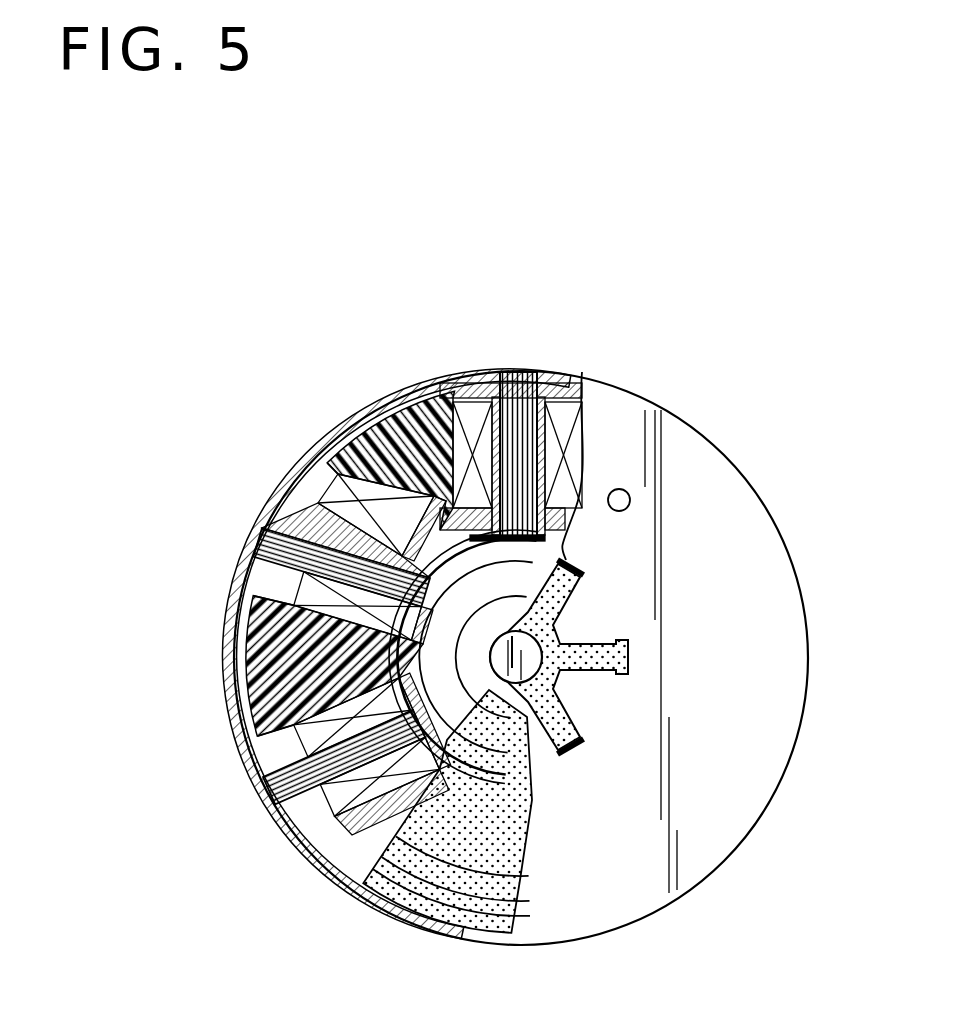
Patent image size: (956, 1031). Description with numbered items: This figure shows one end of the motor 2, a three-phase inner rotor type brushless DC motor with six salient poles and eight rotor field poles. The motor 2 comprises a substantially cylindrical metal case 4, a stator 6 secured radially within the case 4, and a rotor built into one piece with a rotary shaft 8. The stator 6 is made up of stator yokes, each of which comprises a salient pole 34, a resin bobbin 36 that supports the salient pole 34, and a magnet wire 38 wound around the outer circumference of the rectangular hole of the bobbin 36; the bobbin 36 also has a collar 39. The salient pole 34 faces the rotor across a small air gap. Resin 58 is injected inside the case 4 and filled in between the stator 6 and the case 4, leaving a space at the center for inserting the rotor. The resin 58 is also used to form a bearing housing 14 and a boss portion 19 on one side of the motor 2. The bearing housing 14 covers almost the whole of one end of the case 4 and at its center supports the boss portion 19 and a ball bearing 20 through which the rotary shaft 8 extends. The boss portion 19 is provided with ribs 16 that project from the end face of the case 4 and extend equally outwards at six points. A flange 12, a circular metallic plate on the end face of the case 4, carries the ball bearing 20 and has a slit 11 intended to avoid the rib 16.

The motor 2 is at (652, 352).
The case 4 is at (470, 374).
The stator 6 is at (528, 372).
The rotary shaft 8 is at (537, 663).
The slit 11 is at (632, 656).
The flange 12 is at (675, 462).
The bearing housing 14 is at (592, 620).
The ribs 16 is at (553, 745).
The boss portion 19 is at (578, 690).
The ball bearing 20 is at (489, 692).
The salient pole 34 is at (335, 530).
The bobbin 36 is at (335, 478).
The magnet wire 38 is at (330, 490).
The collar 39 is at (275, 554).
The resin 58 is at (393, 443).